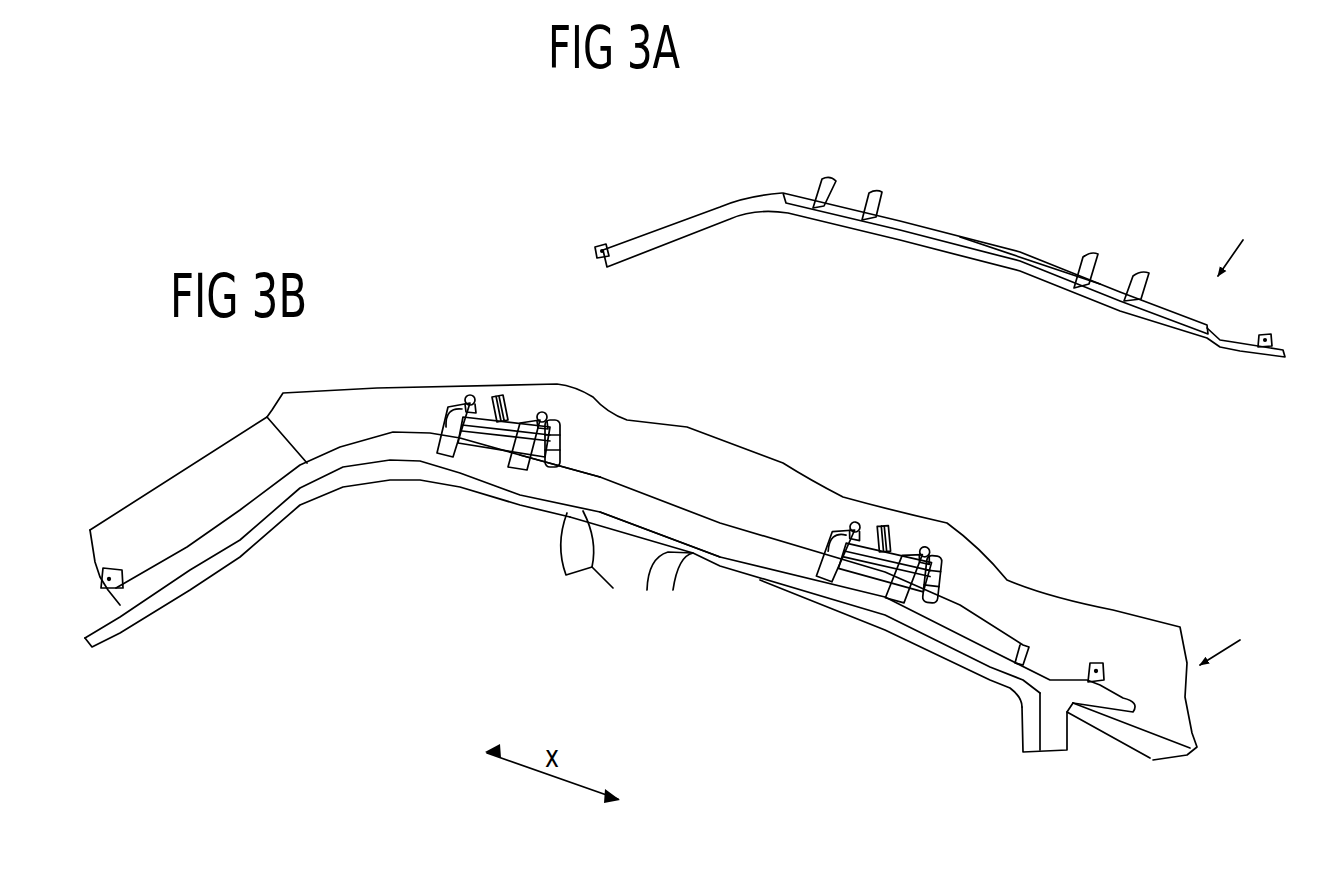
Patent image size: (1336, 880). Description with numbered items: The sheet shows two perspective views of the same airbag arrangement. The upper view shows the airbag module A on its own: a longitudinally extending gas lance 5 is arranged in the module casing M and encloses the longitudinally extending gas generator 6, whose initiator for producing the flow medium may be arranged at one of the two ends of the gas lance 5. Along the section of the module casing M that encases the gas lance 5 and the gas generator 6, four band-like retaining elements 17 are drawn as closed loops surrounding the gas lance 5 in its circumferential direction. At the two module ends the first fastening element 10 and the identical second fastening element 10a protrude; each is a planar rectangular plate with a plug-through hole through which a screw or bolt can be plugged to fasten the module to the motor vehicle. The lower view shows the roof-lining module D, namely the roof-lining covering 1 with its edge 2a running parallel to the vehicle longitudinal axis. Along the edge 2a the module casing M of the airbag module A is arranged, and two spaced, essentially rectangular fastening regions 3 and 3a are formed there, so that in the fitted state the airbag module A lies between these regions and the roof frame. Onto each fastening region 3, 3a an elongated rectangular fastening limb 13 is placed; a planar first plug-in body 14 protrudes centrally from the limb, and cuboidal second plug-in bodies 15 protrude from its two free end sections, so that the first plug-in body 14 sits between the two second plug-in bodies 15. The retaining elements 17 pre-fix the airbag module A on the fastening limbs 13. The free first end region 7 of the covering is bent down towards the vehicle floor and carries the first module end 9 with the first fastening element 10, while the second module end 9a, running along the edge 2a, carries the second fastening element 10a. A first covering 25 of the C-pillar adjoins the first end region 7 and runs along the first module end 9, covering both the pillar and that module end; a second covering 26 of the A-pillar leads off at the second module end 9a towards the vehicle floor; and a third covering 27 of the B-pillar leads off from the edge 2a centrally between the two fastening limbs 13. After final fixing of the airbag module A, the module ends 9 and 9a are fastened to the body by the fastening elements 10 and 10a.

In FIG. 3B, the roof-lining covering 1 is at (683, 448).
In FIG. 3B, the edge 2a is at (752, 577).
In FIG. 3B, the fastening region 3 is at (490, 440).
In FIG. 3B, the fastening region 3a is at (880, 568).
In FIG. 3A, the gas lance 5 is at (887, 230).
In FIG. 3B, the gas lance 5 is at (577, 490).
In FIG. 3A, the gas generator 6 is at (930, 258).
In FIG. 3B, the gas generator 6 is at (797, 572).
In FIG. 3B, the first end region 7 is at (322, 487).
In FIG. 3B, the first module end 9 is at (185, 548).
In FIG. 3B, the second module end 9a is at (1113, 698).
In FIG. 3A, the first fastening element 10 is at (597, 246).
In FIG. 3B, the first fastening element 10 is at (118, 585).
In FIG. 3A, the second fastening element 10a is at (1270, 334).
In FIG. 3B, the second fastening element 10a is at (1098, 667).
In FIG. 3B, the fastening limb 13 is at (557, 427).
In FIG. 3B, the first plug-in body 14 is at (502, 395).
In FIG. 3B, the second plug-in body 15 is at (469, 395).
In FIG. 3A, the retaining element 17 is at (820, 183).
In FIG. 3B, the retaining element 17 is at (447, 447).
In FIG. 3B, the first covering 25 is at (218, 548).
In FIG. 3B, the second covering 26 is at (1050, 727).
In FIG. 3B, the third covering 27 is at (617, 560).
In FIG. 3A, the airbag module A is at (1240, 237).
In FIG. 3B, the airbag module A is at (547, 492).
In FIG. 3B, the roof-lining module D is at (1229, 647).
In FIG. 3A, the module casing M is at (985, 258).
In FIG. 3B, the module casing M is at (723, 538).